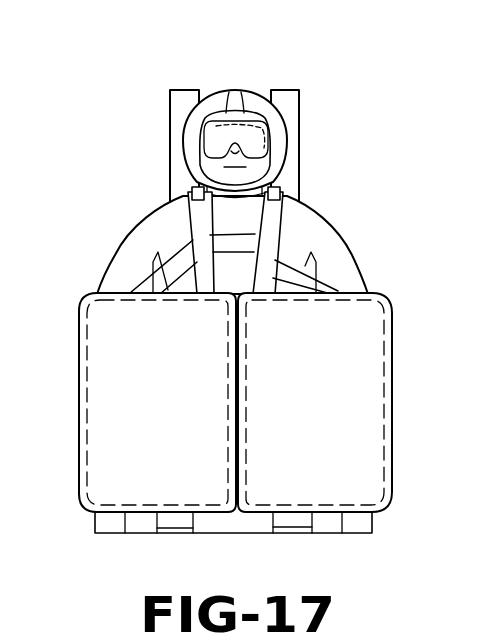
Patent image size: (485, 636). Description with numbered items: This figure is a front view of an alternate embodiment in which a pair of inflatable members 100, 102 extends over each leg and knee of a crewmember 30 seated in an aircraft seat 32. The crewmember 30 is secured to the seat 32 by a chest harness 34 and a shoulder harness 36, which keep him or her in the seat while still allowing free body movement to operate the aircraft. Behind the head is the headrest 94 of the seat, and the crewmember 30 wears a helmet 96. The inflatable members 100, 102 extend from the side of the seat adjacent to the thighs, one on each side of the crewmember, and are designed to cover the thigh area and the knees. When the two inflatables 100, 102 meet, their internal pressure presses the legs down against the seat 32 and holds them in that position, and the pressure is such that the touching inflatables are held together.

The crewmember 30 is at (303, 210).
The aircraft seat 32 is at (375, 520).
The chest harness 34 is at (293, 260).
The shoulder harness 36 is at (197, 213).
The headrest 94 is at (301, 110).
The helmet 96 is at (233, 90).
The inflatable member 100 is at (390, 337).
The inflatable member 102 is at (80, 338).